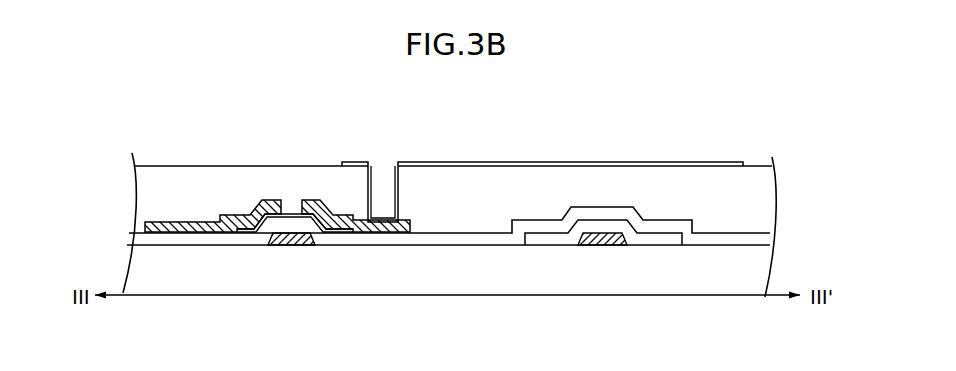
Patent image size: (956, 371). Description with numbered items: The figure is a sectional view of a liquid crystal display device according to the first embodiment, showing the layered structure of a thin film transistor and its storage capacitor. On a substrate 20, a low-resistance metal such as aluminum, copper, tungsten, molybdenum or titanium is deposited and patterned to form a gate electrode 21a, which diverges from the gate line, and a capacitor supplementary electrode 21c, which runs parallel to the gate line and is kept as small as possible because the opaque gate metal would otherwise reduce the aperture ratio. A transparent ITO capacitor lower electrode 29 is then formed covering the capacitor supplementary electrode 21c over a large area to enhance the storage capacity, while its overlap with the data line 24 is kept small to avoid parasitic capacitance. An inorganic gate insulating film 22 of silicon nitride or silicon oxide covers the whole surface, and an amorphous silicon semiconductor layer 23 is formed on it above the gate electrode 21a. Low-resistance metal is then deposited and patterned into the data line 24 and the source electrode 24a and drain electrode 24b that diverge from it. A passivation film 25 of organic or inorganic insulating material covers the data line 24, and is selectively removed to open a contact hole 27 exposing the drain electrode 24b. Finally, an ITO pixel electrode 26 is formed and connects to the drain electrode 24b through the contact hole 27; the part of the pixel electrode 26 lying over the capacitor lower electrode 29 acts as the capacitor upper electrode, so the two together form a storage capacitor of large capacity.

The substrate 20 is at (732, 268).
The gate electrode 21a is at (290, 245).
The capacitor supplementary electrode 21c is at (613, 245).
The gate insulating film 22 is at (463, 234).
The semiconductor layer 23 is at (243, 229).
The data line 24 is at (186, 222).
The source electrode 24a is at (266, 200).
The drain electrode 24b is at (316, 200).
The passivation film 25 is at (765, 195).
The pixel electrode 26 is at (491, 162).
The contact hole 27 is at (383, 187).
The capacitor lower electrode 29 is at (548, 245).